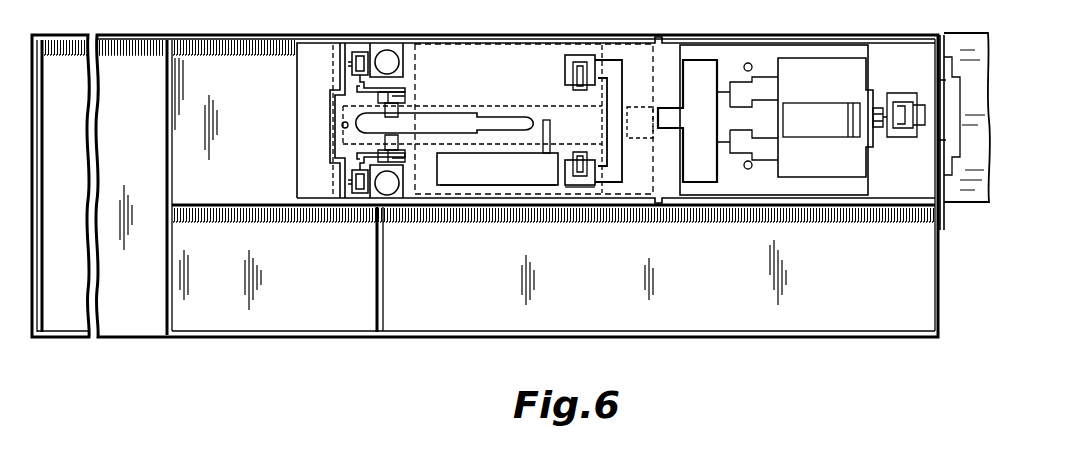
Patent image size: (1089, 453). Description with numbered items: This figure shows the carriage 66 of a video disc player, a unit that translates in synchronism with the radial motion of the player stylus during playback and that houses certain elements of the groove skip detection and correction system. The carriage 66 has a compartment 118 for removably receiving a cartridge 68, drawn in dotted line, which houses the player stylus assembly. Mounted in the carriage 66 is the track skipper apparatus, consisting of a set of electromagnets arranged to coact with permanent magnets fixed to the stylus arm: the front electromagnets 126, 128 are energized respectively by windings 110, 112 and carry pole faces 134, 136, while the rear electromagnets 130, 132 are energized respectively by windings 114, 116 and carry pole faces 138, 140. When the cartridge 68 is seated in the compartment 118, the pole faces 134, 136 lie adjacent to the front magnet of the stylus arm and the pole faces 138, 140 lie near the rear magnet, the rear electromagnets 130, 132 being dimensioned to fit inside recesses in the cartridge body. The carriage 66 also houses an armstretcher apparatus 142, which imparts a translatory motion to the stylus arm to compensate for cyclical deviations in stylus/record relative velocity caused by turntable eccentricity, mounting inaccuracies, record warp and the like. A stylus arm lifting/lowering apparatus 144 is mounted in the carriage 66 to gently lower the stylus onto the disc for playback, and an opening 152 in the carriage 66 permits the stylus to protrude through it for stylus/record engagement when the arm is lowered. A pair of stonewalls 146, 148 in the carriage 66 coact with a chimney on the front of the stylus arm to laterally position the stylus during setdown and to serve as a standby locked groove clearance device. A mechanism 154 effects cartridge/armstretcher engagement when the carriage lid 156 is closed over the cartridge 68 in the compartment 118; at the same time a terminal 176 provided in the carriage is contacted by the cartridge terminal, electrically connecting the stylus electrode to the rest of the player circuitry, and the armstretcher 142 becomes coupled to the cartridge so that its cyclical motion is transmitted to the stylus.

The carriage 66 is at (799, 382).
The cartridge 68 is at (475, 57).
The winding 110 is at (380, 48).
The winding 112 is at (388, 203).
The winding 114 is at (567, 66).
The winding 116 is at (570, 188).
The compartment 118 is at (666, 73).
The front electromagnet 126 is at (355, 49).
The front electromagnet 128 is at (350, 199).
The rear electromagnet 130 is at (585, 51).
The rear electromagnet 132 is at (592, 195).
The pole face 134 is at (405, 94).
The pole face 136 is at (447, 171).
The pole face 138 is at (577, 93).
The pole face 140 is at (582, 146).
The armstretcher apparatus 142 is at (817, 48).
The stylus arm lifting/lowering apparatus 144 is at (513, 178).
The stonewall 146 is at (400, 117).
The stonewall 148 is at (390, 128).
The opening 152 is at (503, 128).
The mechanism 154 is at (906, 89).
The carriage lid 156 is at (980, 75).
The terminal 176 is at (342, 125).